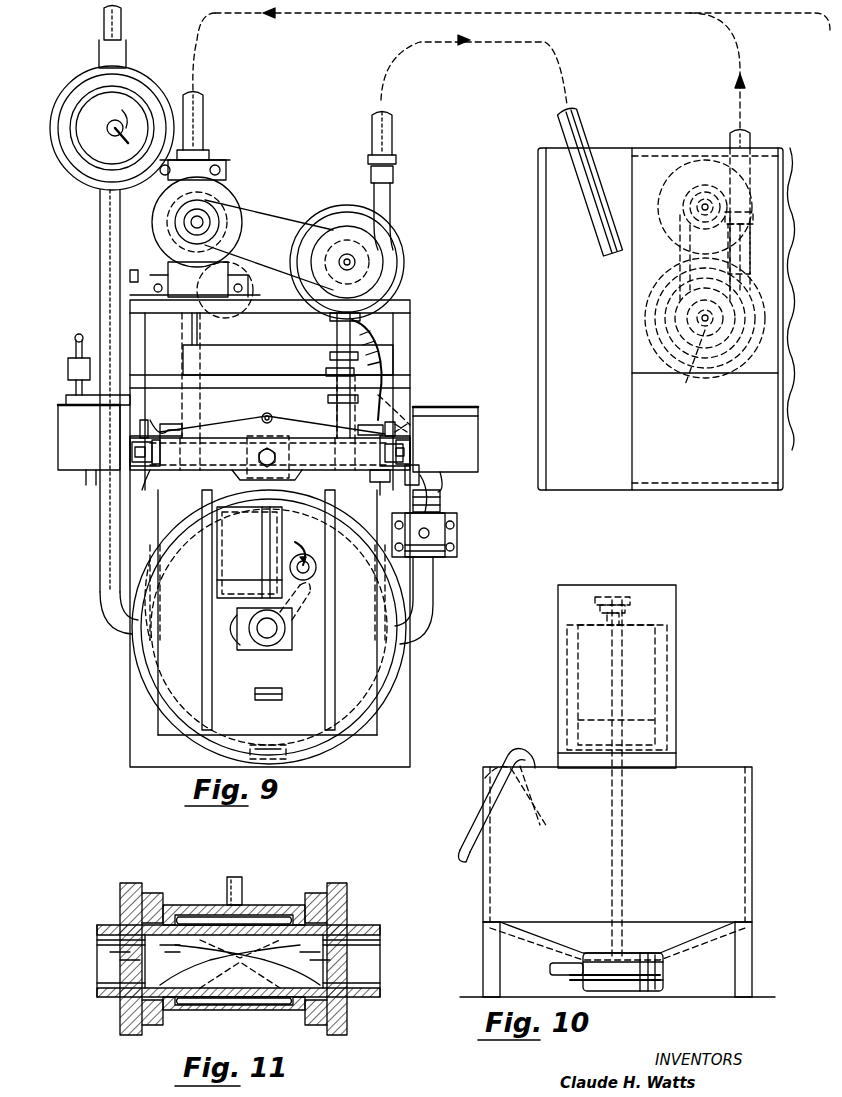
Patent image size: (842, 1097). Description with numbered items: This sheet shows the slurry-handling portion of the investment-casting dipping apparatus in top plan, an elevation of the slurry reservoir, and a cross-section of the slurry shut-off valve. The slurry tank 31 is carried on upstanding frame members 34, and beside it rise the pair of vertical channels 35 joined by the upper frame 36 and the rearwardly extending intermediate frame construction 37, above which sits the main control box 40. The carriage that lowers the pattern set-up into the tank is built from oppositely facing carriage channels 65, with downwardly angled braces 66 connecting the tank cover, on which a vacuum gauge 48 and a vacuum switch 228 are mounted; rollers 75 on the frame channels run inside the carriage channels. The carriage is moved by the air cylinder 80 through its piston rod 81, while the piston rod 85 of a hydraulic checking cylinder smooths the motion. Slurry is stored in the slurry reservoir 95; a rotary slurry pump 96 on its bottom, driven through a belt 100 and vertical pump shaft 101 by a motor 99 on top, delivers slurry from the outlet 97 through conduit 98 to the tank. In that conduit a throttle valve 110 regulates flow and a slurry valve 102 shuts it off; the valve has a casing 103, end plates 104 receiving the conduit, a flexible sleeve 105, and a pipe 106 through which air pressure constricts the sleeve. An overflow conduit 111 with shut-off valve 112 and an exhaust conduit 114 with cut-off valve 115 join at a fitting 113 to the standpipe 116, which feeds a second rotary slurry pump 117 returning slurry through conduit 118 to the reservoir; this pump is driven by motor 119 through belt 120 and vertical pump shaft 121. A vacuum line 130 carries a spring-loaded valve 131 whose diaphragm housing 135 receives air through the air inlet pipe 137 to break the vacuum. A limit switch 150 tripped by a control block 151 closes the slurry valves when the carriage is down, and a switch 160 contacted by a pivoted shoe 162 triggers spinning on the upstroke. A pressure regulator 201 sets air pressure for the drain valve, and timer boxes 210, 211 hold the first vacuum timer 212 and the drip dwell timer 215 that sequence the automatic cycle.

In FIG. 9, the slurry tank 31 is at (392, 688).
In FIG. 9, the upstanding frame members 34 is at (152, 568).
In FIG. 9, the vertical channels 35 is at (142, 480).
In FIG. 9, the upper frame 36 is at (256, 374).
In FIG. 9, the intermediate frame construction 37 is at (128, 312).
In FIG. 9, the main control box 40 is at (258, 348).
In FIG. 9, the vacuum gauge 48 is at (272, 701).
In FIG. 9, the carriage channels 65 is at (140, 440).
In FIG. 9, the downwardly angled braces 66 is at (203, 670).
In FIG. 9, the rollers 75 is at (132, 456).
In FIG. 9, the air cylinder 80 is at (296, 447).
In FIG. 9, the piston rod 81 is at (286, 436).
In FIG. 9, the piston rod 85 is at (258, 446).
In FIG. 10, the slurry reservoir 95 is at (538, 252).
In FIG. 10, the rotary slurry pump 96 is at (730, 378).
In FIG. 10, the outlet 97 is at (742, 238).
In FIG. 9, the conduit 98 is at (206, 104).
In FIG. 10, the conduit 98 is at (752, 138).
In FIG. 11, the conduit 98 is at (100, 1005).
In FIG. 10, the motor 99 is at (690, 162).
In FIG. 10, the belt 100 is at (690, 264).
In FIG. 10, the vertical pump shaft 101 is at (690, 370).
In FIG. 9, the slurry valve 102 is at (243, 303).
In FIG. 11, the slurry valve 102 is at (180, 893).
In FIG. 11, the casing 103 is at (270, 905).
In FIG. 11, the end plates 104 is at (120, 898).
In FIG. 11, the flexible sleeve 105 is at (226, 1012).
In FIG. 11, the pipe 106 is at (240, 878).
In FIG. 9, the throttle valve 110 is at (214, 160).
In FIG. 9, the overflow conduit 111 is at (437, 600).
In FIG. 9, the slurry shut-off valve 112 is at (457, 542).
In FIG. 9, the fitting 113 is at (334, 333).
In FIG. 9, the exhaust conduit 114 is at (374, 590).
In FIG. 9, the slurry cut-off valve 115 is at (332, 372).
In FIG. 9, the standpipe 116 is at (352, 265).
In FIG. 9, the rotary slurry pump 117 is at (400, 250).
In FIG. 9, the conduit 118 is at (396, 138).
In FIG. 10, the conduit 118 is at (576, 120).
In FIG. 9, the motor 119 is at (230, 198).
In FIG. 9, the belt 120 is at (285, 208).
In FIG. 9, the vertical pump shaft 121 is at (365, 276).
In FIG. 9, the vacuum line 130 is at (124, 18).
In FIG. 9, the spring-loaded valve 131 is at (74, 72).
In FIG. 9, the diaphragm housing 135 is at (88, 168).
In FIG. 9, the air inlet pipe 137 is at (112, 121).
In FIG. 9, the limit switch 150 is at (170, 425).
In FIG. 9, the control block 151 is at (383, 426).
In FIG. 9, the switch 160 is at (436, 500).
In FIG. 9, the shoe 162 is at (388, 492).
In FIG. 9, the pressure regulator 201 is at (66, 366).
In FIG. 9, the timer box 210 is at (76, 476).
In FIG. 9, the timer box 211 is at (462, 472).
In FIG. 9, the first vacuum timer 212 is at (88, 488).
In FIG. 9, the drip dwell timer 215 is at (450, 480).
In FIG. 9, the vacuum switch 228 is at (294, 548).